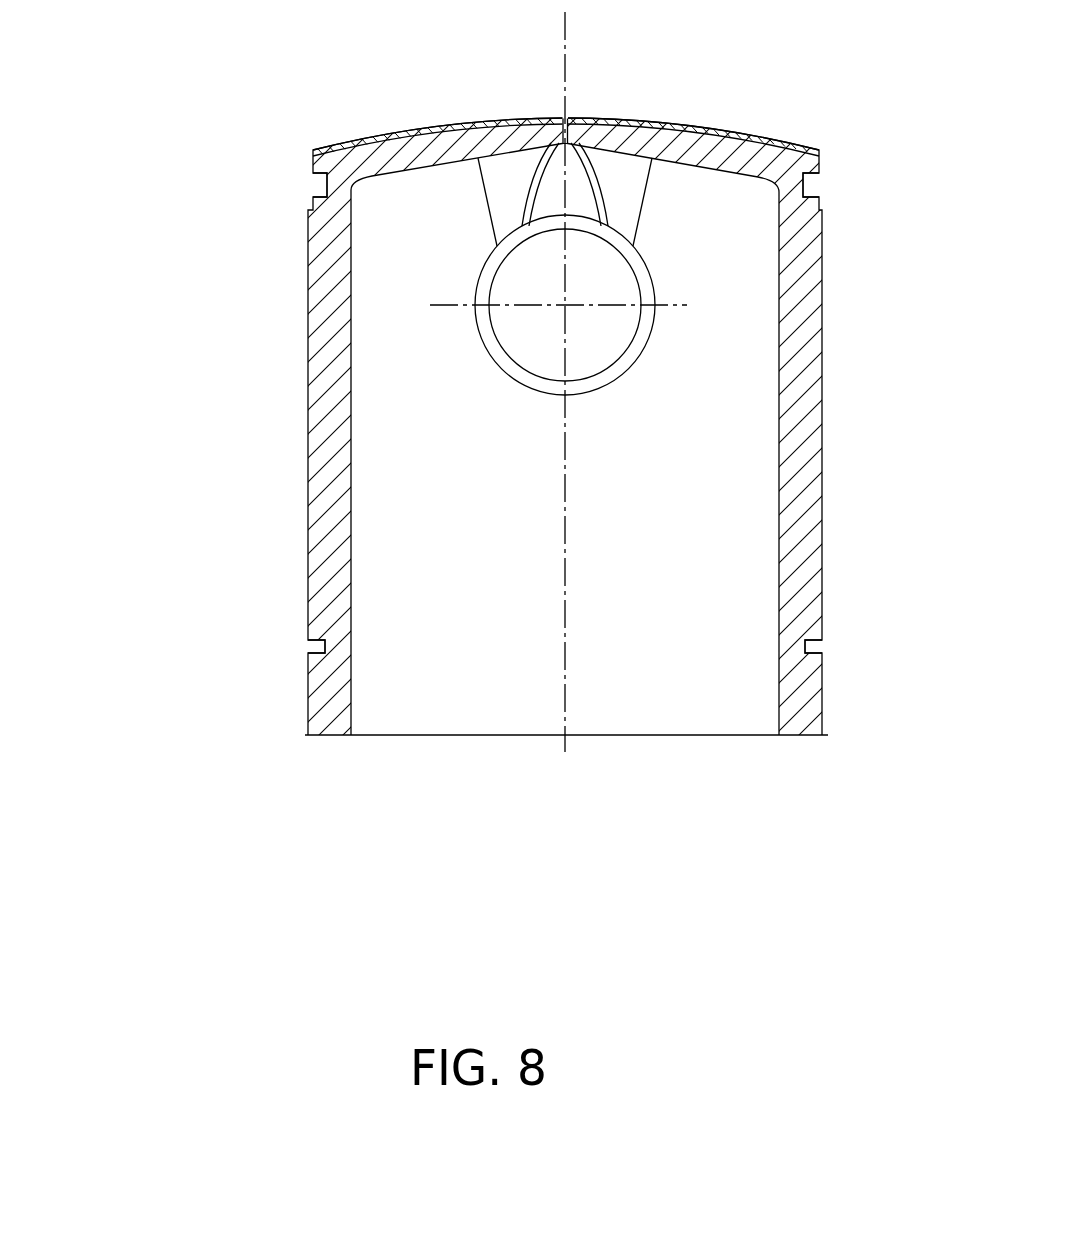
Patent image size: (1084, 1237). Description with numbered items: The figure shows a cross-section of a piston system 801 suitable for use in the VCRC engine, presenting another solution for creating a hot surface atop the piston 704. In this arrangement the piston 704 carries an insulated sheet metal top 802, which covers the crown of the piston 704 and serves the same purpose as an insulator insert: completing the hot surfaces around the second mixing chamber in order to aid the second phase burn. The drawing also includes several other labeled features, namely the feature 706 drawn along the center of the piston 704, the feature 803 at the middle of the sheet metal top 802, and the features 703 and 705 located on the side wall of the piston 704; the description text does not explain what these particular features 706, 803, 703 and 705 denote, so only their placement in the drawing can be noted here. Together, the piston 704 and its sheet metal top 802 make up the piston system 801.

The central axis 706 is at (563, 60).
The insulated sheet metal top 802 is at (480, 122).
The slot 803 is at (570, 120).
The upper groove 703 is at (312, 176).
The piston 704 is at (308, 431).
The lower groove 705 is at (308, 642).
The piston system 801 is at (737, 773).